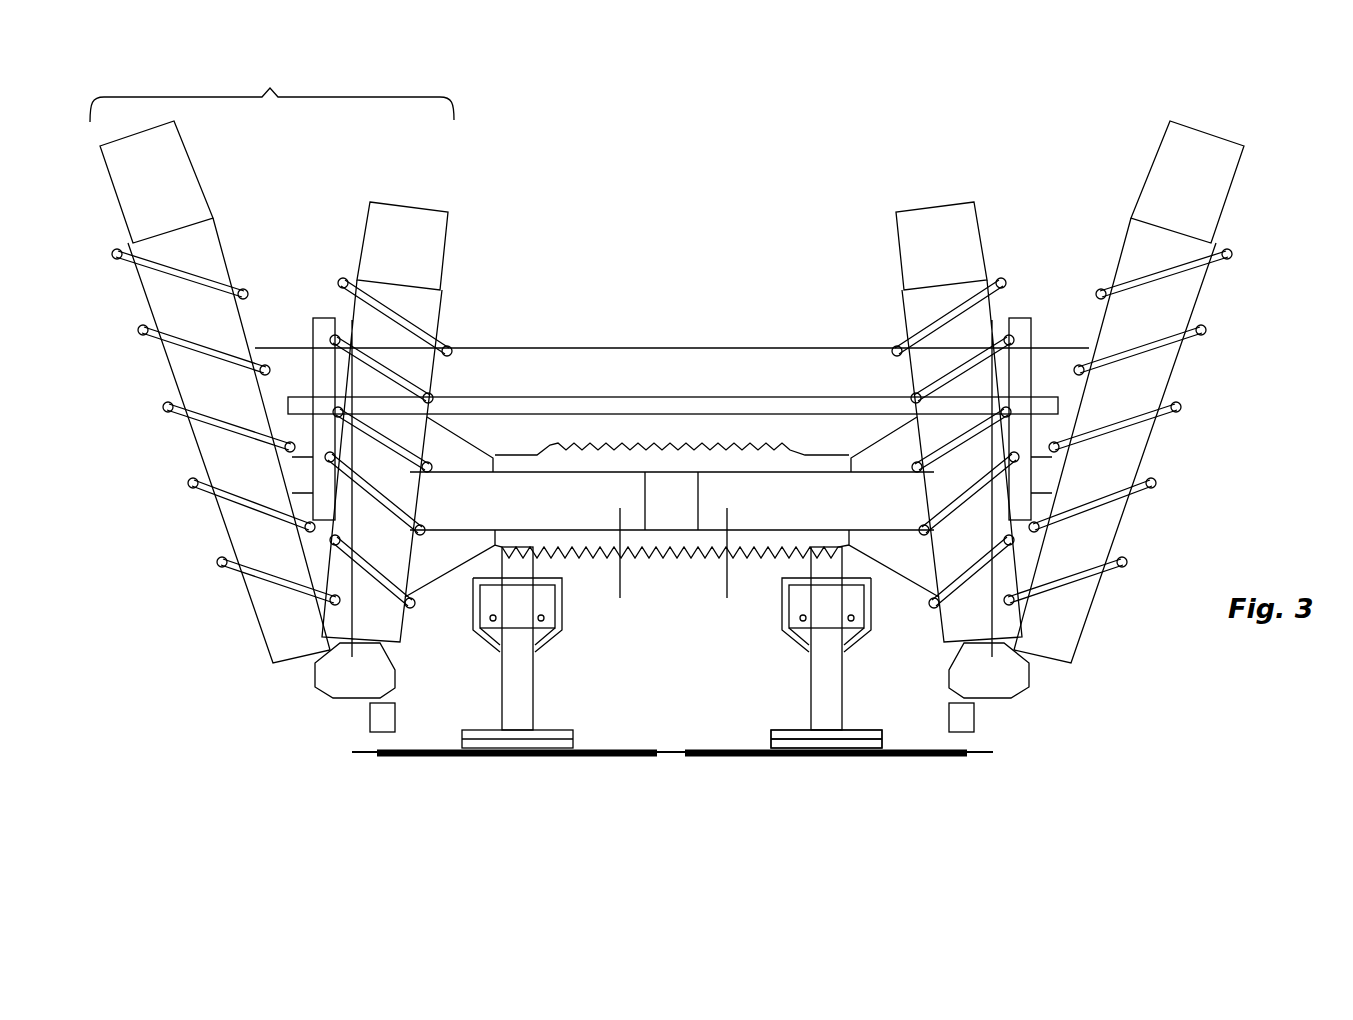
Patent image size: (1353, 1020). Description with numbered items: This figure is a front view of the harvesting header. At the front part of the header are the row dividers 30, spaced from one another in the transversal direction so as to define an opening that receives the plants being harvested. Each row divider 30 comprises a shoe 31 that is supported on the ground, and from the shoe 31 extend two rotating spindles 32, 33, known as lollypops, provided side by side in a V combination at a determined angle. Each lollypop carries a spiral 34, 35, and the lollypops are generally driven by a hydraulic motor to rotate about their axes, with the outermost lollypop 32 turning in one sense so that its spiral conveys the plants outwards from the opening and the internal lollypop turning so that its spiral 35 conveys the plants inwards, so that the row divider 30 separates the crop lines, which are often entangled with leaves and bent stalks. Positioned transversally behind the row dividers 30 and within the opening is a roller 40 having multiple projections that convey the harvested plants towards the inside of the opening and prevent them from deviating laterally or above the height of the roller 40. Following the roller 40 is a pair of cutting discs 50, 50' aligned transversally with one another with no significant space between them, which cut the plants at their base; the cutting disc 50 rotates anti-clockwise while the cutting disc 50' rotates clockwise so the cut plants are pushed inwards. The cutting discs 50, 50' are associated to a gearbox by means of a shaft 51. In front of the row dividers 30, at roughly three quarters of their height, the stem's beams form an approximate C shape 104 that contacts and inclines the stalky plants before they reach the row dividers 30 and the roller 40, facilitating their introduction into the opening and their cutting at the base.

The row divider 30 is at (270, 88).
The shoe 31 is at (338, 683).
The rotating spindle 32 is at (277, 633).
The rotating spindle 33 is at (363, 330).
The spiral 34 is at (195, 418).
The spiral 35 is at (418, 340).
The roller 40 is at (757, 500).
The cutting disc 50 is at (490, 783).
The cutting disc 50' is at (815, 783).
The shaft 51 is at (832, 682).
The C-shaped portion 104 is at (637, 408).